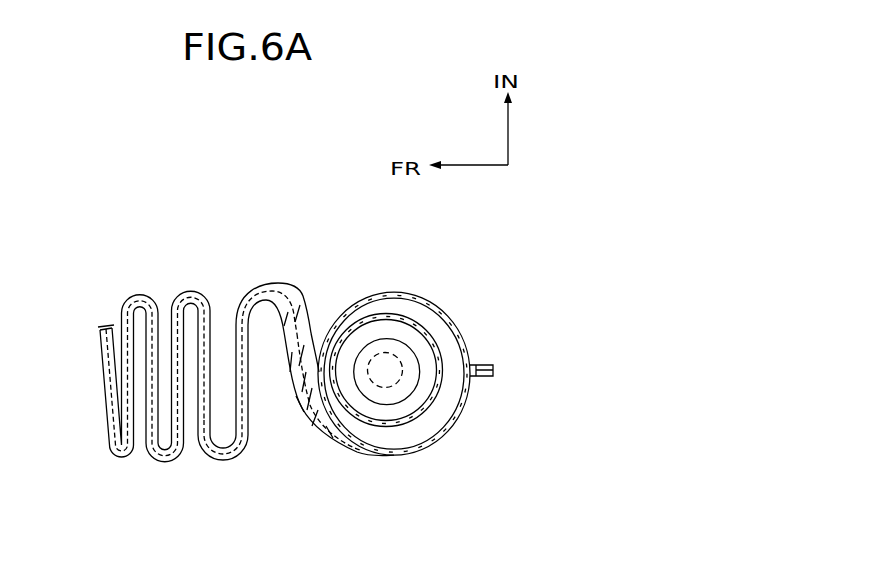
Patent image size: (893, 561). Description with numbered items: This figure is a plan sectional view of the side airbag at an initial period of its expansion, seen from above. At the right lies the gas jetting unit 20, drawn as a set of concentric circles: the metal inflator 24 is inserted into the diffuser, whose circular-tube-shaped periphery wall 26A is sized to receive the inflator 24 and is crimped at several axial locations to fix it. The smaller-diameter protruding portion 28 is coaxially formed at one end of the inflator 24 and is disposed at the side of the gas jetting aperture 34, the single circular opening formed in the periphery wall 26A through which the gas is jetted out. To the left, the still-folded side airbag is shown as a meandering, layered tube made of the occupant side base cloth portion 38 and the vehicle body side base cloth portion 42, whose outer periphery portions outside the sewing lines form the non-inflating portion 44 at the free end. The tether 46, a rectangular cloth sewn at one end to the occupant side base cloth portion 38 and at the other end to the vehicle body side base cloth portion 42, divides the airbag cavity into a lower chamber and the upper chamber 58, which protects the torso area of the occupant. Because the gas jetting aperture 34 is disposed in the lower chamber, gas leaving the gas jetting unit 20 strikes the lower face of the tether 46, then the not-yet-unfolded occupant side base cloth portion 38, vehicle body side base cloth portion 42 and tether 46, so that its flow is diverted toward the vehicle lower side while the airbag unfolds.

The gas jetting unit 20 is at (418, 419).
The inflator 24 is at (403, 380).
The periphery wall 26A is at (430, 334).
The protruding portion 28 is at (432, 398).
The gas jetting aperture 34 is at (347, 342).
The occupant side base cloth portion 38 is at (200, 292).
The vehicle body side base cloth portion 42 is at (225, 466).
The non-inflating portion 44 is at (97, 332).
The tether 46 is at (323, 424).
The upper chamber 58 is at (304, 318).